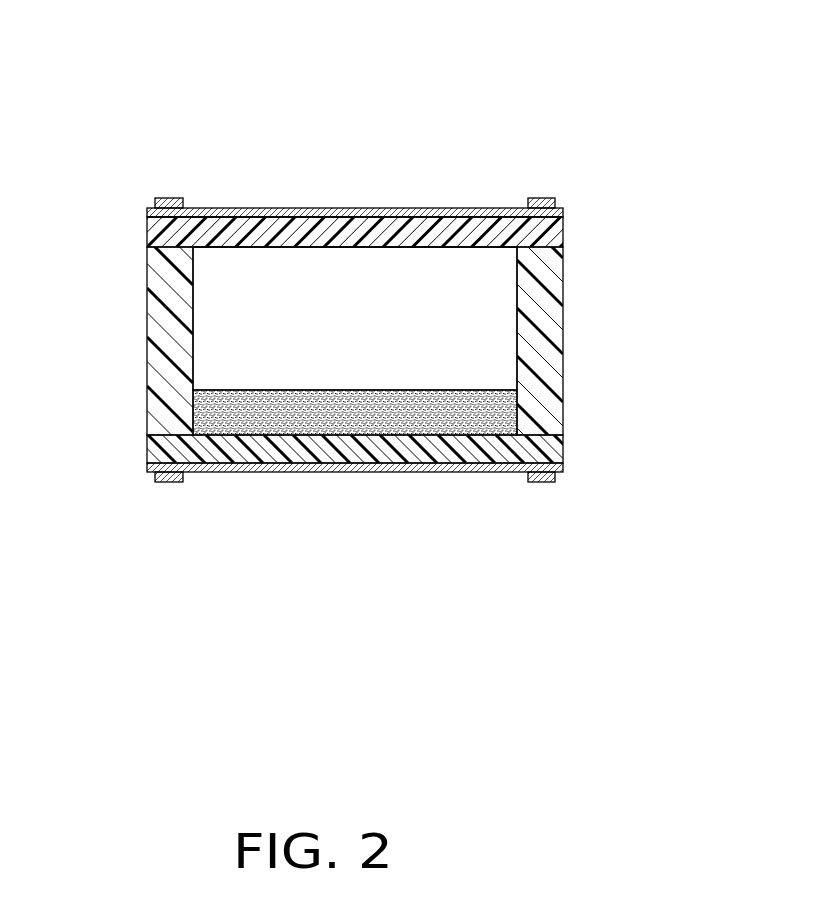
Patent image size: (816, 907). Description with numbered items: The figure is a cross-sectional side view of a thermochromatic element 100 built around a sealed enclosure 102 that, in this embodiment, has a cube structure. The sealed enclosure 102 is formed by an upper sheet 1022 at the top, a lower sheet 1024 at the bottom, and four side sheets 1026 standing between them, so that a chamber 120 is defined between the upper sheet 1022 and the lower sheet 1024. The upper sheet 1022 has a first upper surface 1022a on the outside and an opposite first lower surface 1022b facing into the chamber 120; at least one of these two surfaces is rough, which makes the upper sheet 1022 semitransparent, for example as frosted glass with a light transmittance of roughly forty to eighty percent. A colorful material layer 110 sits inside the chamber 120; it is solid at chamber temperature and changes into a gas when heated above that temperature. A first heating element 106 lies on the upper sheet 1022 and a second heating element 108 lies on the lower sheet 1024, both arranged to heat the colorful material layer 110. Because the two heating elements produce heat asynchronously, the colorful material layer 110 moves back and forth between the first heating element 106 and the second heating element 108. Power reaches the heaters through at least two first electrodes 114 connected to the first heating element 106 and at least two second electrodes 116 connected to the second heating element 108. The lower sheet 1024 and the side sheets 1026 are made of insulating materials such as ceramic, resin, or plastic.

The thermochromatic element 100 is at (388, 265).
The sealed enclosure 102 is at (388, 313).
The upper sheet 1022 is at (565, 235).
The first upper surface 1022a is at (298, 206).
The first lower surface 1022b is at (238, 253).
The lower sheet 1024 is at (401, 450).
The side sheets 1026 is at (540, 313).
The first heating element 106 is at (453, 209).
The second heating element 108 is at (430, 472).
The colorful material layer 110 is at (205, 414).
The first electrodes 114 is at (165, 198).
The second electrodes 116 is at (153, 478).
The chamber 120 is at (225, 310).